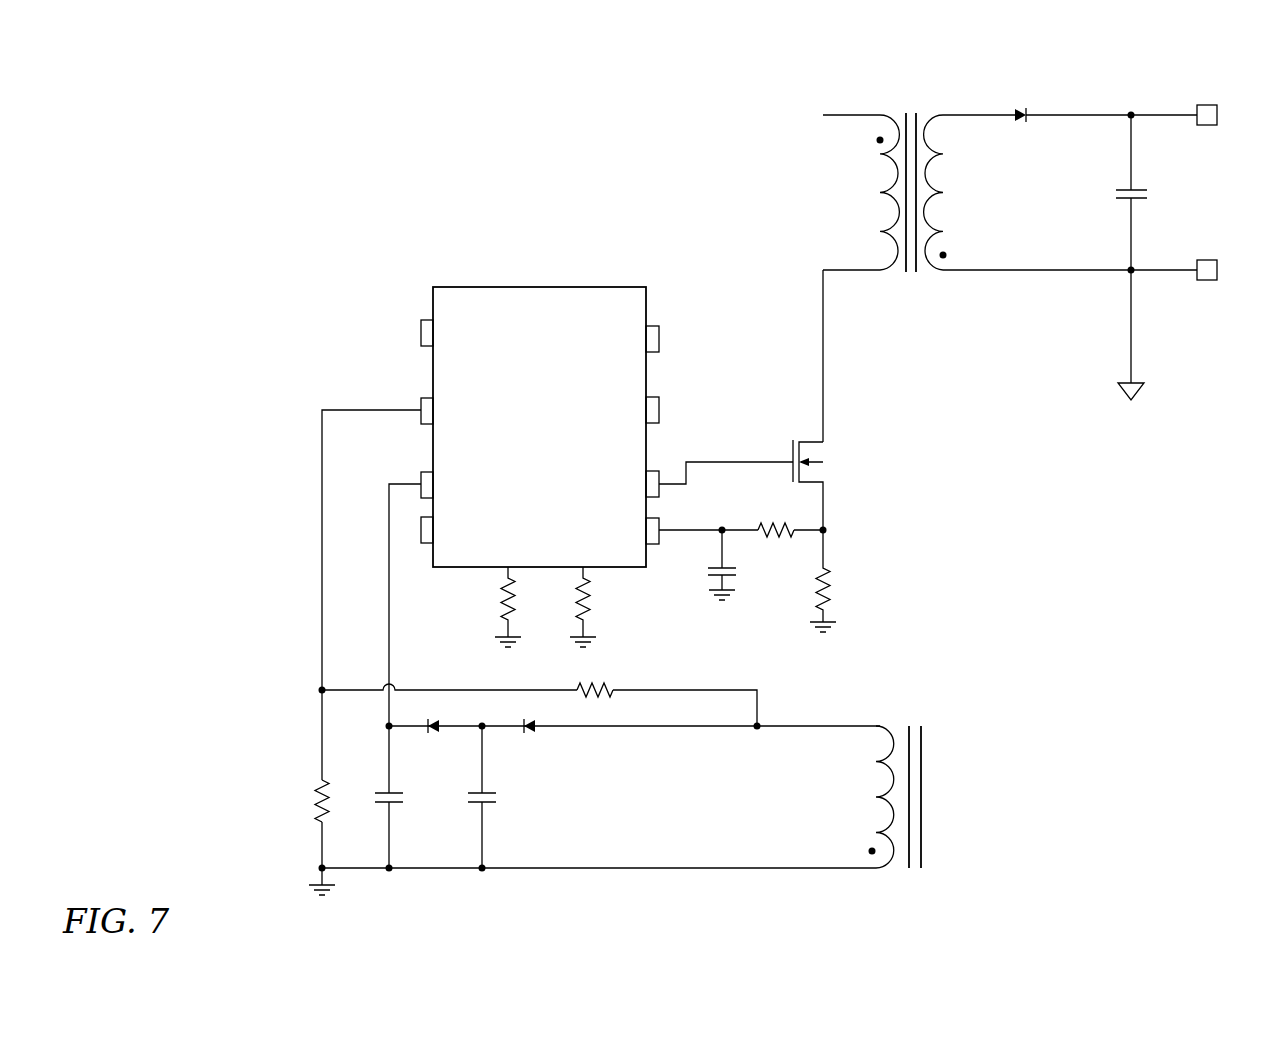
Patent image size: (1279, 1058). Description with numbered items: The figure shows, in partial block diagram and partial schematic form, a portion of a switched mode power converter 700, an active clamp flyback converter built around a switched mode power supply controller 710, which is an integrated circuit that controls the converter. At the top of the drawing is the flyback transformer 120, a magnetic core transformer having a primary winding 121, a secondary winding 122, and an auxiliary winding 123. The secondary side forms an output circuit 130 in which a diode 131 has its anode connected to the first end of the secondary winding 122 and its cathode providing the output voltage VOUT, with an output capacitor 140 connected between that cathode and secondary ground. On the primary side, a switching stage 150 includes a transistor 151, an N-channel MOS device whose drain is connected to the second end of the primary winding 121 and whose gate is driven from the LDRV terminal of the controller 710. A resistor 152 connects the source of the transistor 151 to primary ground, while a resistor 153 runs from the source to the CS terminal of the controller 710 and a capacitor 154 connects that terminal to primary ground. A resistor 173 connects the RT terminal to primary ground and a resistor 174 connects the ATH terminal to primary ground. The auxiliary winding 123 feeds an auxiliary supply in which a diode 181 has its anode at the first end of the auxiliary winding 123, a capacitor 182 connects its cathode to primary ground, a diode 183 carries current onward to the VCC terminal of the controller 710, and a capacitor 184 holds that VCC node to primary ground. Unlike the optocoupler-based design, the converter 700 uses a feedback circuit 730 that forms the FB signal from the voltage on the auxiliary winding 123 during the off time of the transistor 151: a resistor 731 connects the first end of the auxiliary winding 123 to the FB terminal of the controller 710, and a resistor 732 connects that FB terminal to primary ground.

The switched mode power converter 700 is at (258, 212).
The switched mode power supply controller 710 is at (498, 287).
The flyback transformer 120 is at (886, 75).
The primary winding 121 is at (860, 272).
The secondary winding 122 is at (942, 272).
The auxiliary winding 123 is at (890, 867).
The output circuit 130 is at (978, 94).
The diode 131 is at (1021, 110).
The output capacitor 140 is at (1122, 197).
The switching stage 150 is at (848, 462).
The transistor 151 is at (812, 441).
The resistor 152 is at (838, 587).
The resistor 153 is at (762, 522).
The capacitor 154 is at (710, 578).
The resistor 173 is at (497, 603).
The resistor 174 is at (573, 603).
The diode 181 is at (528, 733).
The capacitor 182 is at (490, 804).
The diode 183 is at (433, 733).
The capacitor 184 is at (397, 804).
The feedback circuit 730 is at (280, 720).
The resistor 731 is at (610, 686).
The resistor 732 is at (310, 813).